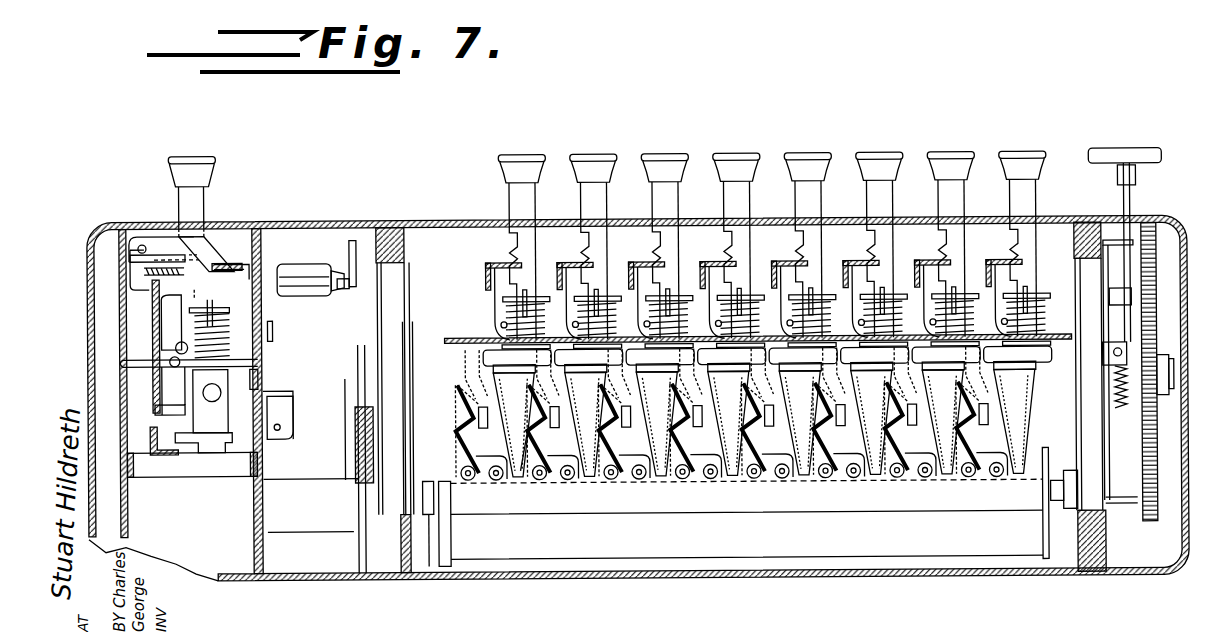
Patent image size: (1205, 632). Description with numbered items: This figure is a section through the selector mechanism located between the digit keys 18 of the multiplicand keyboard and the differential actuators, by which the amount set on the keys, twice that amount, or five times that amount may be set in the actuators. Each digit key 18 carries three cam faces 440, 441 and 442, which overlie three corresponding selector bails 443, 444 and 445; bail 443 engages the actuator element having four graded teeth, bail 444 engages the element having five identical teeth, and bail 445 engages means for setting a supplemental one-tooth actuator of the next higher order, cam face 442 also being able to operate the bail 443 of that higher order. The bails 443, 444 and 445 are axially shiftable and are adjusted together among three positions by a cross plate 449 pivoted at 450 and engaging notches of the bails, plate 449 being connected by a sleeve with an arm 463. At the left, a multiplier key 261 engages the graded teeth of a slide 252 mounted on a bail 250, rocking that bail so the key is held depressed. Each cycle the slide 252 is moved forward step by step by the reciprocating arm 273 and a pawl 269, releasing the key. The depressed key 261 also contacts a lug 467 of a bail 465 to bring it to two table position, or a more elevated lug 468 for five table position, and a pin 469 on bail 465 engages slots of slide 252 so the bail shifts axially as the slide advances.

The digit keys 18 is at (800, 152).
The bail 250 is at (155, 398).
The slide 252 is at (178, 271).
The multiplier keys 261 is at (208, 161).
The pawl 269 is at (138, 273).
The reciprocating arm 273 is at (222, 265).
The cam face 440 is at (500, 362).
The cam face 441 is at (495, 378).
The cam face 442 is at (470, 378).
The selector bail 443 is at (527, 432).
The selector bail 444 is at (503, 400).
The selector bail 445 is at (480, 432).
The cross plate 449 is at (700, 502).
The pivot 450 is at (413, 553).
The arm 463 is at (432, 553).
The bail 465 is at (228, 248).
The lug 467 is at (227, 285).
The lug 468 is at (248, 273).
The pin 469 is at (190, 283).